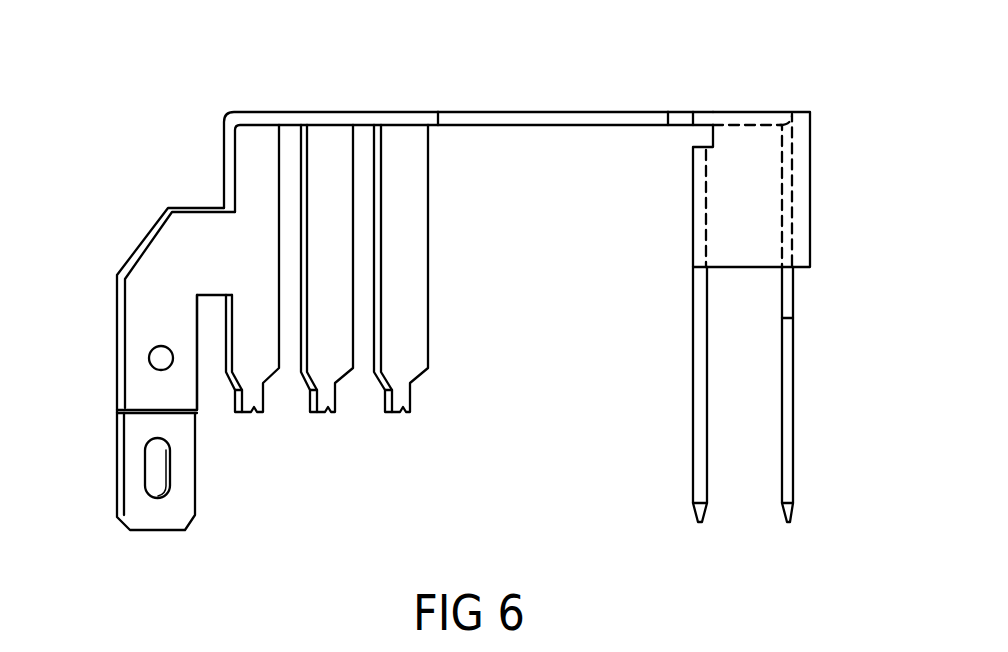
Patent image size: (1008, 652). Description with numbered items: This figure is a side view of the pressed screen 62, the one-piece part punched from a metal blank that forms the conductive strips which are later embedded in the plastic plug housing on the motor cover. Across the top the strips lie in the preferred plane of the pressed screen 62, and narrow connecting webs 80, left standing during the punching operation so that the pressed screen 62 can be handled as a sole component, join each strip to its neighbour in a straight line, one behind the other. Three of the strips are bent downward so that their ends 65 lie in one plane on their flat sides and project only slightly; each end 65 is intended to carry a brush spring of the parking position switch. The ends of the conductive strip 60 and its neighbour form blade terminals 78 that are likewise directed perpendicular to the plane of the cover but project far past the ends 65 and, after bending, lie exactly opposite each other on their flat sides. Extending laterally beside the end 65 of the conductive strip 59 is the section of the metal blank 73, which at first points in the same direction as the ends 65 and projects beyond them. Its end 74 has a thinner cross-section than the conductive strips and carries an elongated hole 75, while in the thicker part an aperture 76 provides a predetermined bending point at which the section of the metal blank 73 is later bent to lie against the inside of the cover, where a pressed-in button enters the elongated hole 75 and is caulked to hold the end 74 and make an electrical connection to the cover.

The conductive strip 59 is at (503, 119).
The pressed screen 62 is at (621, 72).
The connecting web 80 is at (680, 112).
The conductive strip 60 is at (703, 112).
The blade terminal 78 is at (692, 437).
The section of the metal blank 73 is at (141, 378).
The aperture 76 is at (158, 348).
The ends of the conductive strips 65 is at (266, 368).
The end of the section of the metal blank 74 is at (128, 498).
The elongated hole 75 is at (158, 483).